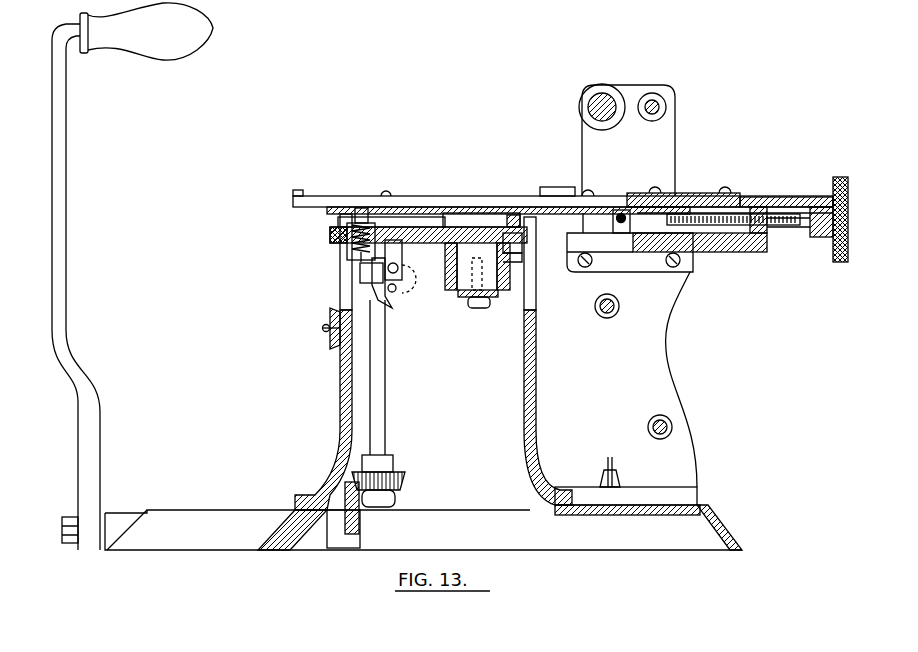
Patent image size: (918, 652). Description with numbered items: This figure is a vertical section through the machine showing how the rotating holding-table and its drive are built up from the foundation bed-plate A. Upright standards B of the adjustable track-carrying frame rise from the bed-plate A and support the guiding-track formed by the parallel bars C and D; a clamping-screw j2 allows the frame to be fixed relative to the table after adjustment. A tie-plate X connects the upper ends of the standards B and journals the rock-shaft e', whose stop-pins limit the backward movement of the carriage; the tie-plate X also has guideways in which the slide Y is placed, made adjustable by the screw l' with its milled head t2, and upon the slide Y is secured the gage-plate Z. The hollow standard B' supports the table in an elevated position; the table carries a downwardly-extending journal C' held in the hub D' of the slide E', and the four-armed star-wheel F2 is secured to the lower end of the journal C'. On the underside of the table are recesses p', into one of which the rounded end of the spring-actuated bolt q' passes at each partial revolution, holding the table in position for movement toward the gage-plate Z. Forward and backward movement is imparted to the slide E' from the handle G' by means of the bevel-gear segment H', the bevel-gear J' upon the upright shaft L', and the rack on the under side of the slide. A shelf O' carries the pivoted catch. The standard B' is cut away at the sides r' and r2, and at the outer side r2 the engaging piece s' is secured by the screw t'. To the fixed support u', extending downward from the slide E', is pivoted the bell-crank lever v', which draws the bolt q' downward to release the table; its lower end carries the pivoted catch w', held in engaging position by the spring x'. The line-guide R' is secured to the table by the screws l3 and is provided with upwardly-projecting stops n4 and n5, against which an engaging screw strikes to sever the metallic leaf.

The handle G' is at (132, 276).
The foundation bed-plate A is at (423, 516).
The upright standard B is at (648, 411).
The hollow standard B' is at (305, 382).
The track bar C is at (582, 106).
The track bar D is at (674, 103).
The journal C' is at (467, 290).
The hub D' is at (530, 262).
The slide E' is at (315, 236).
The four-armed star-wheel F2 is at (468, 300).
The bevel-gear segment H' is at (360, 515).
The bevel-gear J' is at (393, 488).
The upright shaft L' is at (388, 386).
The shelf O' is at (483, 323).
The line-guide R' is at (563, 188).
The tie-plate X is at (698, 250).
The slide Y is at (779, 198).
The gage-plate Z is at (694, 196).
The rock-shaft e' is at (599, 257).
The clamping-screw j2 is at (620, 480).
The screw l' is at (733, 238).
The screw l3 is at (388, 191).
The upwardly-projecting stop n4 is at (294, 192).
The upwardly-projecting stop n5 is at (568, 188).
The recess p' is at (360, 207).
The spring-actuated bolt q' is at (332, 246).
The cut-away side r' is at (548, 361).
The outer cut-away side r2 is at (347, 292).
The engaging piece s' is at (309, 332).
The screw t' is at (296, 357).
The knob t2 is at (838, 260).
The fixed support u' is at (434, 220).
The bell-crank lever v' is at (472, 261).
The pivoted catch w' is at (314, 283).
The spring x' is at (459, 228).